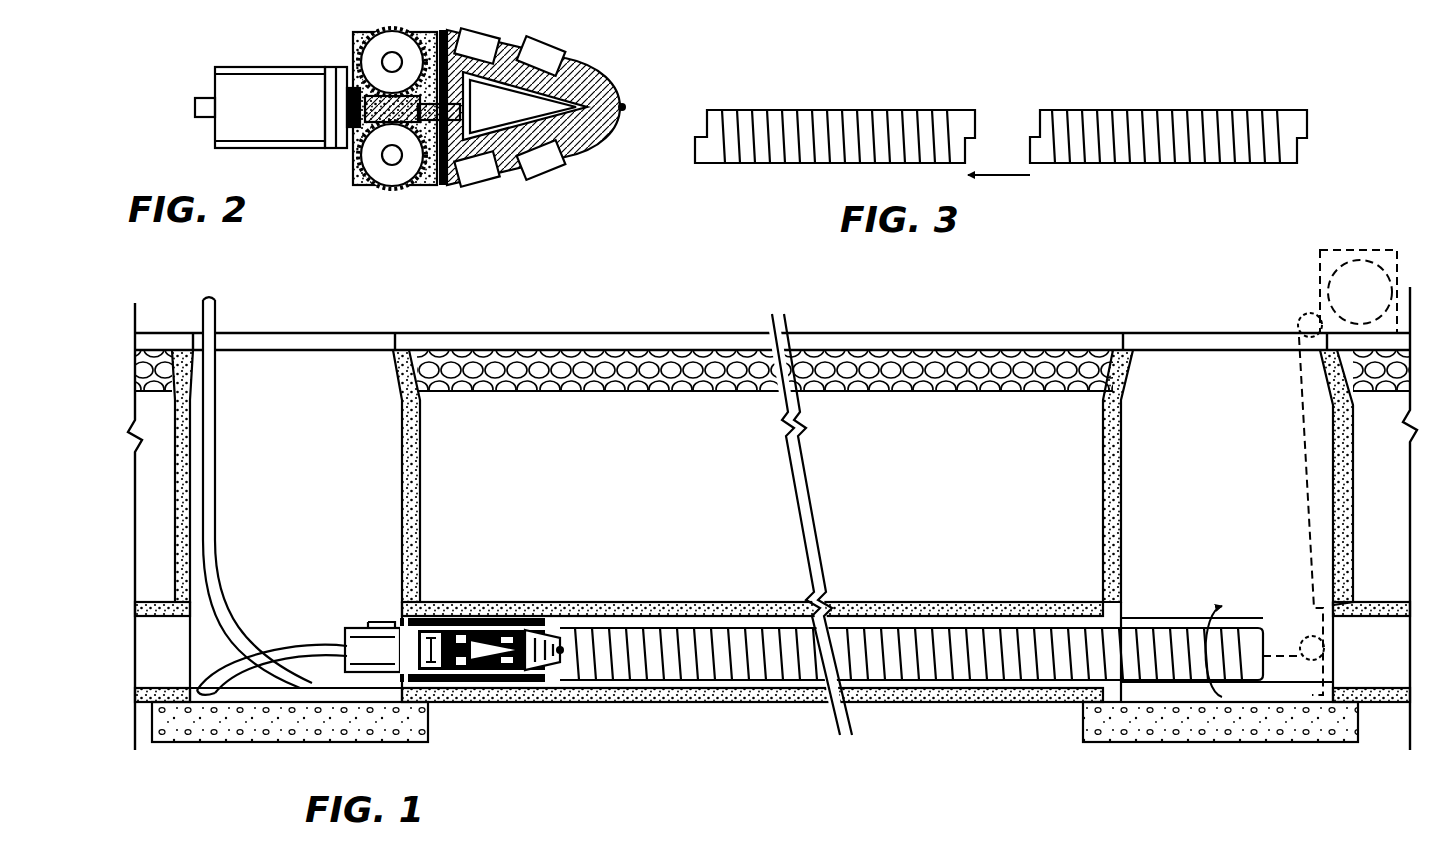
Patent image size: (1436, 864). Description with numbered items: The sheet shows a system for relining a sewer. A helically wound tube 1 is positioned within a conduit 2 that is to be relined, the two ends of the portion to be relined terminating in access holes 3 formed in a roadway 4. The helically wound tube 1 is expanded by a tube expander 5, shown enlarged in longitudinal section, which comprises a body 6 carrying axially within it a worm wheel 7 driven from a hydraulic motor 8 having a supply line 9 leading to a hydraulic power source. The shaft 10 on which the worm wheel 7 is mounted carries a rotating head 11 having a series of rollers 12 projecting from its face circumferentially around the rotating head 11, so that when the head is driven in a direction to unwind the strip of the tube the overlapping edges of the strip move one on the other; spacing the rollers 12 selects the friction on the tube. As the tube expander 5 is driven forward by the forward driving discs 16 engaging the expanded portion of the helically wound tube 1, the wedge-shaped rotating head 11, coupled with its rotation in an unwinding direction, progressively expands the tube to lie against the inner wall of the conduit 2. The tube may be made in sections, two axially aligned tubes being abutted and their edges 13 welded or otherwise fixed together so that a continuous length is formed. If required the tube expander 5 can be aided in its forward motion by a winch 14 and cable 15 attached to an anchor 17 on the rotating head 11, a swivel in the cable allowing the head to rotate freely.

In FIG. 1, the helically wound tube 1 is at (672, 632).
In FIG. 3, the helically wound tube 1 is at (822, 112).
In FIG. 1, the conduit 2 is at (722, 610).
In FIG. 1, the access holes 3 is at (332, 438).
In FIG. 1, the roadway 4 is at (1020, 347).
In FIG. 1, the tube expander 5 is at (543, 603).
In FIG. 2, the body 6 is at (432, 185).
In FIG. 2, the worm wheel 7 is at (346, 150).
In FIG. 1, the hydraulic motor 8 is at (345, 634).
In FIG. 2, the hydraulic motor 8 is at (252, 84).
In FIG. 1, the supply line 9 is at (215, 410).
In FIG. 2, the shaft 10 is at (456, 118).
In FIG. 1, the rotating head 11 is at (500, 684).
In FIG. 2, the rotating head 11 is at (579, 168).
In FIG. 1, the rollers 12 is at (514, 604).
In FIG. 2, the rollers 12 is at (545, 55).
In FIG. 3, the edges 13 is at (1036, 130).
In FIG. 1, the winch 14 is at (1338, 283).
In FIG. 1, the cable 15 is at (1310, 488).
In FIG. 1, the forward driving discs 16 is at (450, 630).
In FIG. 2, the forward driving discs 16 is at (372, 50).
In FIG. 1, the anchor 17 is at (562, 668).
In FIG. 2, the anchor 17 is at (628, 112).